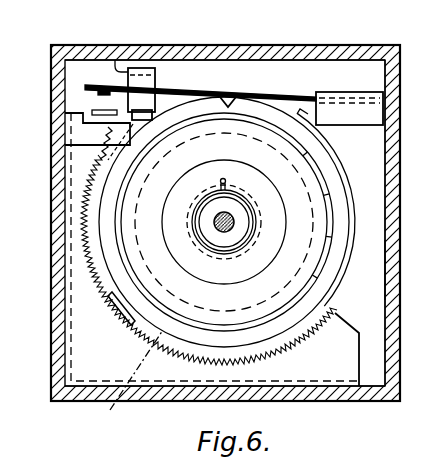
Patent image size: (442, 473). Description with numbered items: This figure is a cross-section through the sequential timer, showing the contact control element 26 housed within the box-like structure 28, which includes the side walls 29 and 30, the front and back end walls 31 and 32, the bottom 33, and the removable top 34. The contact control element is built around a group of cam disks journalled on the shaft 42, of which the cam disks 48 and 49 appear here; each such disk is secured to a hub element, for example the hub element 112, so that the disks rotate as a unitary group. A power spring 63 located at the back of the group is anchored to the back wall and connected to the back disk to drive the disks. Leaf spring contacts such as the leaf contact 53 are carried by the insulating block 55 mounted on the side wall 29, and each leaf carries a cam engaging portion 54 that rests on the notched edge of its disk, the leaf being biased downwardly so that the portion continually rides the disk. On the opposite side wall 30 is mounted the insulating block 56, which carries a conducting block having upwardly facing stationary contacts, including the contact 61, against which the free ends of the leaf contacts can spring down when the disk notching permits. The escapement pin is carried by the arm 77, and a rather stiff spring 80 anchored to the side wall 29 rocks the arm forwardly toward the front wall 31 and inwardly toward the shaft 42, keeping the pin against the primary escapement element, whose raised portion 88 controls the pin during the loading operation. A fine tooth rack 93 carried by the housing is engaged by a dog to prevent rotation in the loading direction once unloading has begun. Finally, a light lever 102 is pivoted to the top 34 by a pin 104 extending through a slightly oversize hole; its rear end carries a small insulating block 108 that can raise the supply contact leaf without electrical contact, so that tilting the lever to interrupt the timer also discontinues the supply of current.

The contact control element 26 is at (161, 360).
The box-like structure 28 is at (222, 44).
The side wall 29 is at (441, 292).
The side wall 30 is at (60, 270).
The front end wall 31 is at (364, 270).
The back end wall 32 is at (441, 333).
The bottom 33 is at (311, 395).
The removable top 34 is at (165, 50).
The shaft 42 is at (224, 222).
The cam disk 48 is at (318, 268).
The cam disk 49 is at (270, 314).
The leaf spring contact 53 is at (173, 88).
The cam engaging portion 54 is at (230, 96).
The insulating block 55 is at (373, 118).
The insulating block 56 is at (80, 138).
The upwardly facing contact 61 is at (92, 110).
The power spring 63 is at (227, 260).
The arm 77 is at (441, 153).
The spring 80 is at (441, 198).
The raised portion 88 is at (340, 158).
The fine tooth rack 93 is at (100, 286).
The light lever 102 is at (115, 60).
The pin 104 is at (143, 68).
The insulating block 108 is at (157, 112).
The hub element 112 is at (122, 380).